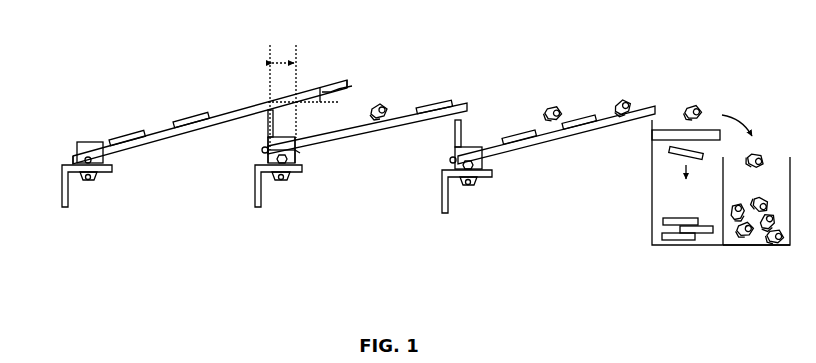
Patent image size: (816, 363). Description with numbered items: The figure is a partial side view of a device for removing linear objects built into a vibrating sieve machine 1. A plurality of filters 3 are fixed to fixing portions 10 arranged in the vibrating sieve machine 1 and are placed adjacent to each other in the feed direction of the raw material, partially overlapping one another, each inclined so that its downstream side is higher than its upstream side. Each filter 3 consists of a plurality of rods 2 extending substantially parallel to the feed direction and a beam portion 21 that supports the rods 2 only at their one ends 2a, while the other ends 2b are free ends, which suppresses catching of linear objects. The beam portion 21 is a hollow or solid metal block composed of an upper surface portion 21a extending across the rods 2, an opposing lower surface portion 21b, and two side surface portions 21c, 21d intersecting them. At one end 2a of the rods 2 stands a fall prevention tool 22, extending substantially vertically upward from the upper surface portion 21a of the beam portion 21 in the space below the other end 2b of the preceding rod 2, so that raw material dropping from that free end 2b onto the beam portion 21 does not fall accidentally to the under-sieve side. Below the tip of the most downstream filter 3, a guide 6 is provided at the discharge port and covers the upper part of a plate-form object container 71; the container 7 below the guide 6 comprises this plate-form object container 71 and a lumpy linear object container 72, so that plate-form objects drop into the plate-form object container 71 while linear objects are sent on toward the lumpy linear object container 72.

The vibrating sieve machine 1 is at (249, 249).
The rod 2 is at (226, 108).
The one end of rod 2a is at (71, 154).
The other end of rod 2b is at (270, 72).
The filter 3 is at (163, 92).
The guide 6 is at (652, 140).
The container 7 is at (651, 173).
The fixing portion 10 is at (69, 195).
The beam portion 21 is at (92, 139).
The upper surface portion 21a is at (297, 133).
The lower surface portion 21b is at (262, 151).
The side surface portion 21c is at (268, 152).
The side surface portion 21d is at (300, 153).
The fall prevention tool 22 is at (268, 134).
The plate-form object container 71 is at (686, 245).
The lumpy linear object container 72 is at (737, 245).